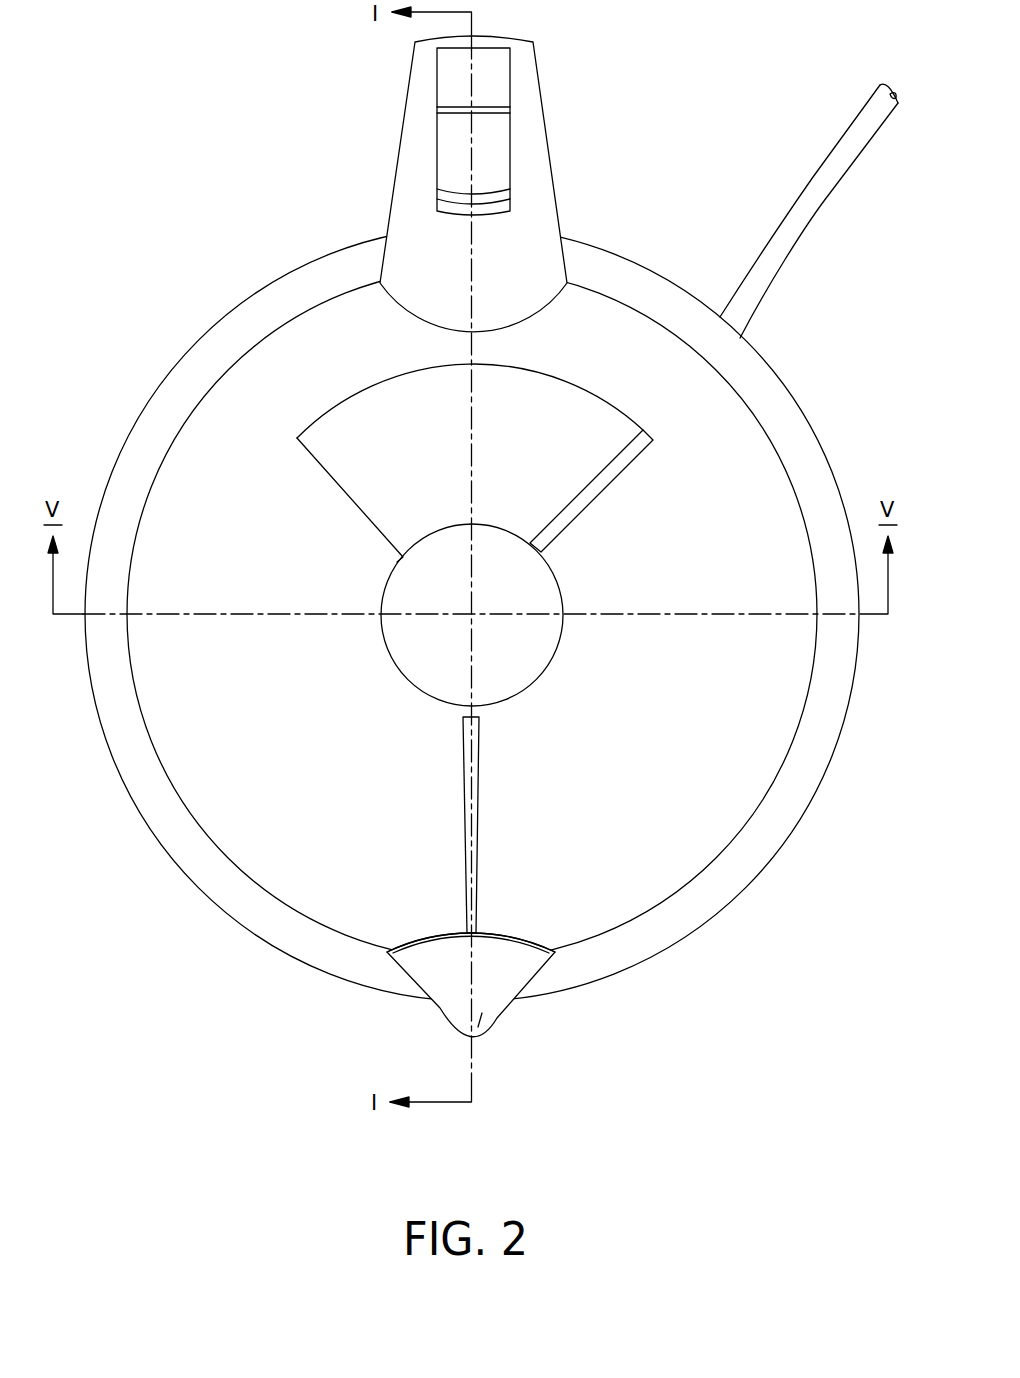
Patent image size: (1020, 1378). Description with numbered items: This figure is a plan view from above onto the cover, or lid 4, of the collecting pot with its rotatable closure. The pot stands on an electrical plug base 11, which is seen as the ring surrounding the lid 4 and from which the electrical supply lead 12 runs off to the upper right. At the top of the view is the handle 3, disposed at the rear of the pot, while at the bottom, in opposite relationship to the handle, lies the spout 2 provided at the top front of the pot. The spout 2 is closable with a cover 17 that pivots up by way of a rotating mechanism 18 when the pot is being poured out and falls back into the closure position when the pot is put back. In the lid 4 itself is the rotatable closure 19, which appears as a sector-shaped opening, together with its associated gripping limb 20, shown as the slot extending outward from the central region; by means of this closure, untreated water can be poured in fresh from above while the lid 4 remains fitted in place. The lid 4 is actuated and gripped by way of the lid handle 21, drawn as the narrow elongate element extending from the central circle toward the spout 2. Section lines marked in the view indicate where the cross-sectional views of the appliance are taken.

The spout 2 is at (481, 1036).
The handle 3 is at (408, 190).
The cover or lid 4 is at (648, 772).
The electrical plug base 11 is at (305, 302).
The electrical supply lead 12 is at (828, 195).
The cover 17 is at (458, 997).
The rotating mechanism 18 is at (388, 952).
The rotatable closure 19 is at (333, 440).
The gripping limb 20 is at (603, 478).
The lid handle 21 is at (473, 837).